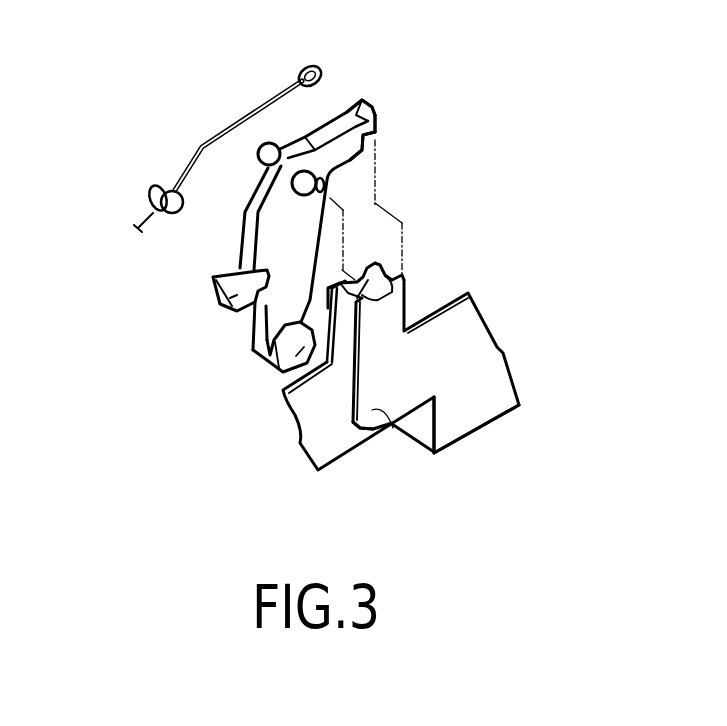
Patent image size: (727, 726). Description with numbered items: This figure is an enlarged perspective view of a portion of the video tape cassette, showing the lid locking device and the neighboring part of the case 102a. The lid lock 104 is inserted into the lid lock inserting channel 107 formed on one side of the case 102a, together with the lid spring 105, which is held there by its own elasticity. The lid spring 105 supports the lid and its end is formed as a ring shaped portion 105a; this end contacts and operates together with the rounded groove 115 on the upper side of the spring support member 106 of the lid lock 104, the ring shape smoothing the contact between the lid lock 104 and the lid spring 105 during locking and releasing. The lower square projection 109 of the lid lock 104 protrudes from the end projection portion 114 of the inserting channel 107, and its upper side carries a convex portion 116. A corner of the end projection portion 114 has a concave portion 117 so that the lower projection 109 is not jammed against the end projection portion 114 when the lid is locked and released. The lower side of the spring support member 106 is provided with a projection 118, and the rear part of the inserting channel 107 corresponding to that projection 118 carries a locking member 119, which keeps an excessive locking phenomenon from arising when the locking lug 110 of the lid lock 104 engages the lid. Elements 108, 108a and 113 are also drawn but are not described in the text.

The case 102a is at (510, 349).
The lid lock 104 is at (230, 238).
The lid spring 105 is at (226, 122).
The ring shaped portion 105a is at (322, 69).
The spring support member 106 is at (372, 105).
The lid lock inserting channel 107 is at (346, 358).
The boss 108 is at (271, 143).
The boss 108a is at (324, 187).
The lower square projection 109 is at (283, 372).
The locking lug 110 is at (225, 306).
The lower tab 113 is at (422, 460).
The end projection portion 114 is at (390, 428).
The rounded groove 115 is at (376, 138).
The convex portion 116 is at (262, 360).
The concave portion 117 is at (373, 410).
The projection 118 is at (360, 164).
The locking member 119 is at (392, 279).